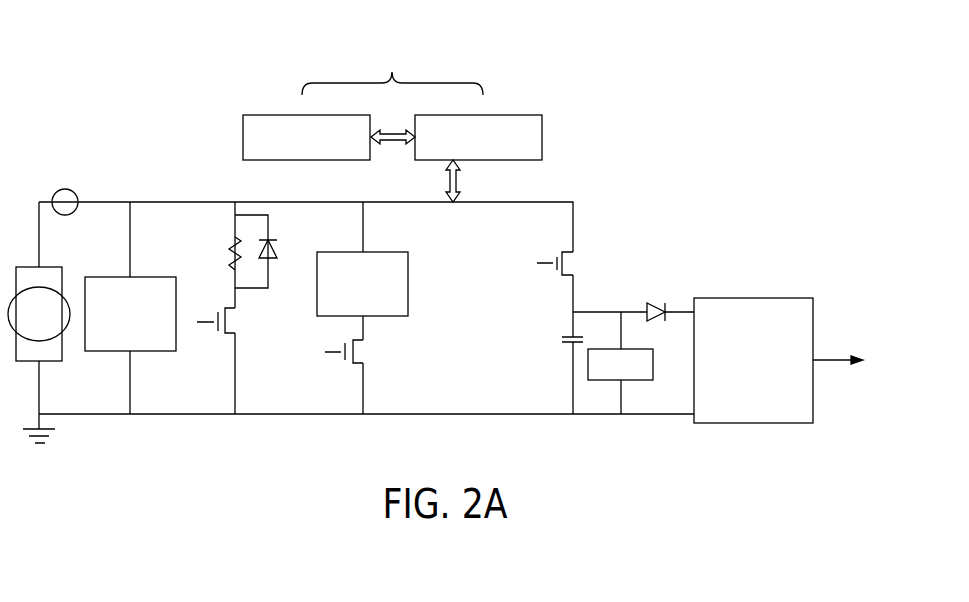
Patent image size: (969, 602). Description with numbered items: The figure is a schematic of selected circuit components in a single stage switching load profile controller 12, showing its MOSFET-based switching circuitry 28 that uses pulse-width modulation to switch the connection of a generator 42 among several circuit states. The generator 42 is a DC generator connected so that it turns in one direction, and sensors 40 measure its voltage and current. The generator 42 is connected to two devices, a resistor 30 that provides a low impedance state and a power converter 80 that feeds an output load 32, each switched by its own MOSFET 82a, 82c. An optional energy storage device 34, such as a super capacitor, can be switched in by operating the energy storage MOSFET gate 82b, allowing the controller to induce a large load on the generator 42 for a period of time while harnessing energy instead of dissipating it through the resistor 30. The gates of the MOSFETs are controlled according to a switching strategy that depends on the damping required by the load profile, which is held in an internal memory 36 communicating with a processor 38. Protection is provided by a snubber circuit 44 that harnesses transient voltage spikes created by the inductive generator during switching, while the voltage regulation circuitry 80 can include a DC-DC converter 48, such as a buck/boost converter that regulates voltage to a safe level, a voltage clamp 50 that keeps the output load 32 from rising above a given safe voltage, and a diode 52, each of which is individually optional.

The load profile controller 12 is at (396, 106).
The switching circuitry 28 is at (591, 175).
The resistor 30 is at (222, 250).
The output load 32 is at (835, 358).
The energy storage device 34 is at (408, 282).
The internal memory 36 is at (317, 160).
The processor 38 is at (492, 160).
The sensors 40 is at (64, 189).
The generator 42 is at (50, 362).
The snubber circuit 44 is at (150, 352).
The DC-DC converter 48 is at (715, 298).
The voltage clamp 50 is at (628, 380).
The diode 52 is at (657, 297).
The voltage regulation circuitry 80 is at (715, 250).
The MOSFET 82a is at (211, 298).
The energy storage MOSFET gate 82b is at (341, 373).
The MOSFET 82c is at (549, 288).